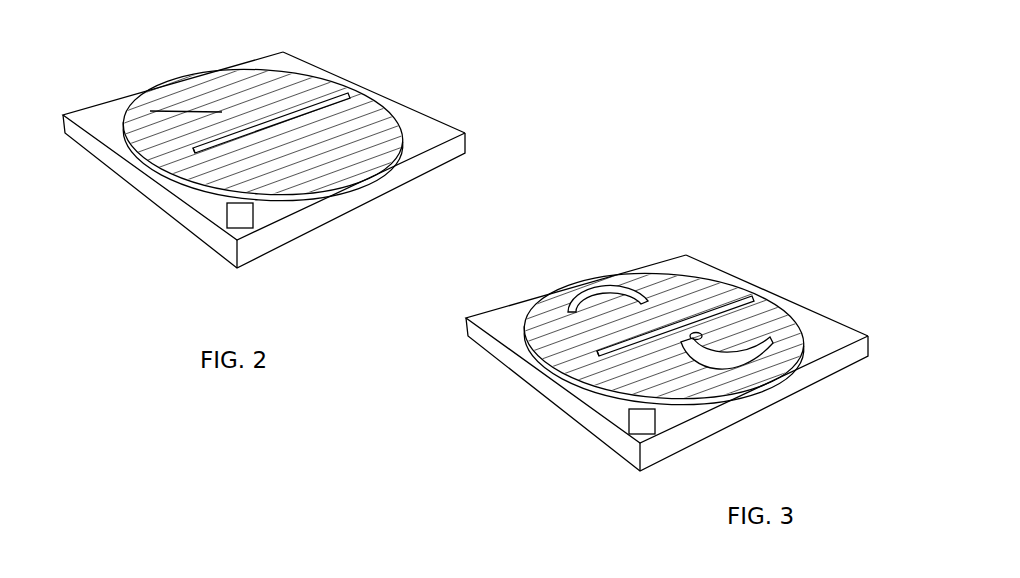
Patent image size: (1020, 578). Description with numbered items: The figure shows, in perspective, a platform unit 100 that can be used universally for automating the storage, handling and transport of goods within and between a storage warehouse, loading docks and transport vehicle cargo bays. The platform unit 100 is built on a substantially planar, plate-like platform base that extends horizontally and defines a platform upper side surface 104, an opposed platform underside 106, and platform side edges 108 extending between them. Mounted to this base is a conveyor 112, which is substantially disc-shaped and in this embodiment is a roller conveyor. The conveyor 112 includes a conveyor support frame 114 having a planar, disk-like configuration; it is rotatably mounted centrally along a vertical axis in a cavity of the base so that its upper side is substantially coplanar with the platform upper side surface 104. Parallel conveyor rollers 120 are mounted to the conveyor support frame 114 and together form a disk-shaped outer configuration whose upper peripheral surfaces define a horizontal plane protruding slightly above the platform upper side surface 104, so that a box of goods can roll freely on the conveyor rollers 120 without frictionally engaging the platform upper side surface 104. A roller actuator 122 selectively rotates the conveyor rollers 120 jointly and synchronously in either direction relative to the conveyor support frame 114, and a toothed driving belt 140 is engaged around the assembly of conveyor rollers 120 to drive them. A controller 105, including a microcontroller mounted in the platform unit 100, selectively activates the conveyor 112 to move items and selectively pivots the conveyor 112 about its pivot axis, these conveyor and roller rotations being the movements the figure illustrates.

In FIG. 2, the platform unit 100 is at (313, 173).
In FIG. 3, the platform unit 100 is at (695, 321).
In FIG. 2, the platform upper side surface 104 is at (415, 142).
In FIG. 3, the platform upper side surface 104 is at (824, 346).
In FIG. 2, the controller 105 is at (230, 228).
In FIG. 3, the controller 105 is at (633, 441).
In FIG. 2, the platform underside 106 is at (368, 205).
In FIG. 3, the platform underside 106 is at (772, 407).
In FIG. 2, the platform side edges 108 is at (378, 185).
In FIG. 3, the platform side edges 108 is at (787, 392).
In FIG. 2, the conveyor 112 is at (358, 134).
In FIG. 3, the conveyor 112 is at (656, 390).
In FIG. 2, the conveyor support frame 114 is at (392, 118).
In FIG. 3, the conveyor support frame 114 is at (803, 322).
In FIG. 2, the conveyor rollers 120 is at (222, 112).
In FIG. 3, the conveyor rollers 120 is at (632, 313).
In FIG. 2, the roller actuator 122 is at (194, 153).
In FIG. 3, the roller actuator 122 is at (601, 354).
In FIG. 2, the driving belt 140 is at (192, 146).
In FIG. 3, the driving belt 140 is at (597, 350).